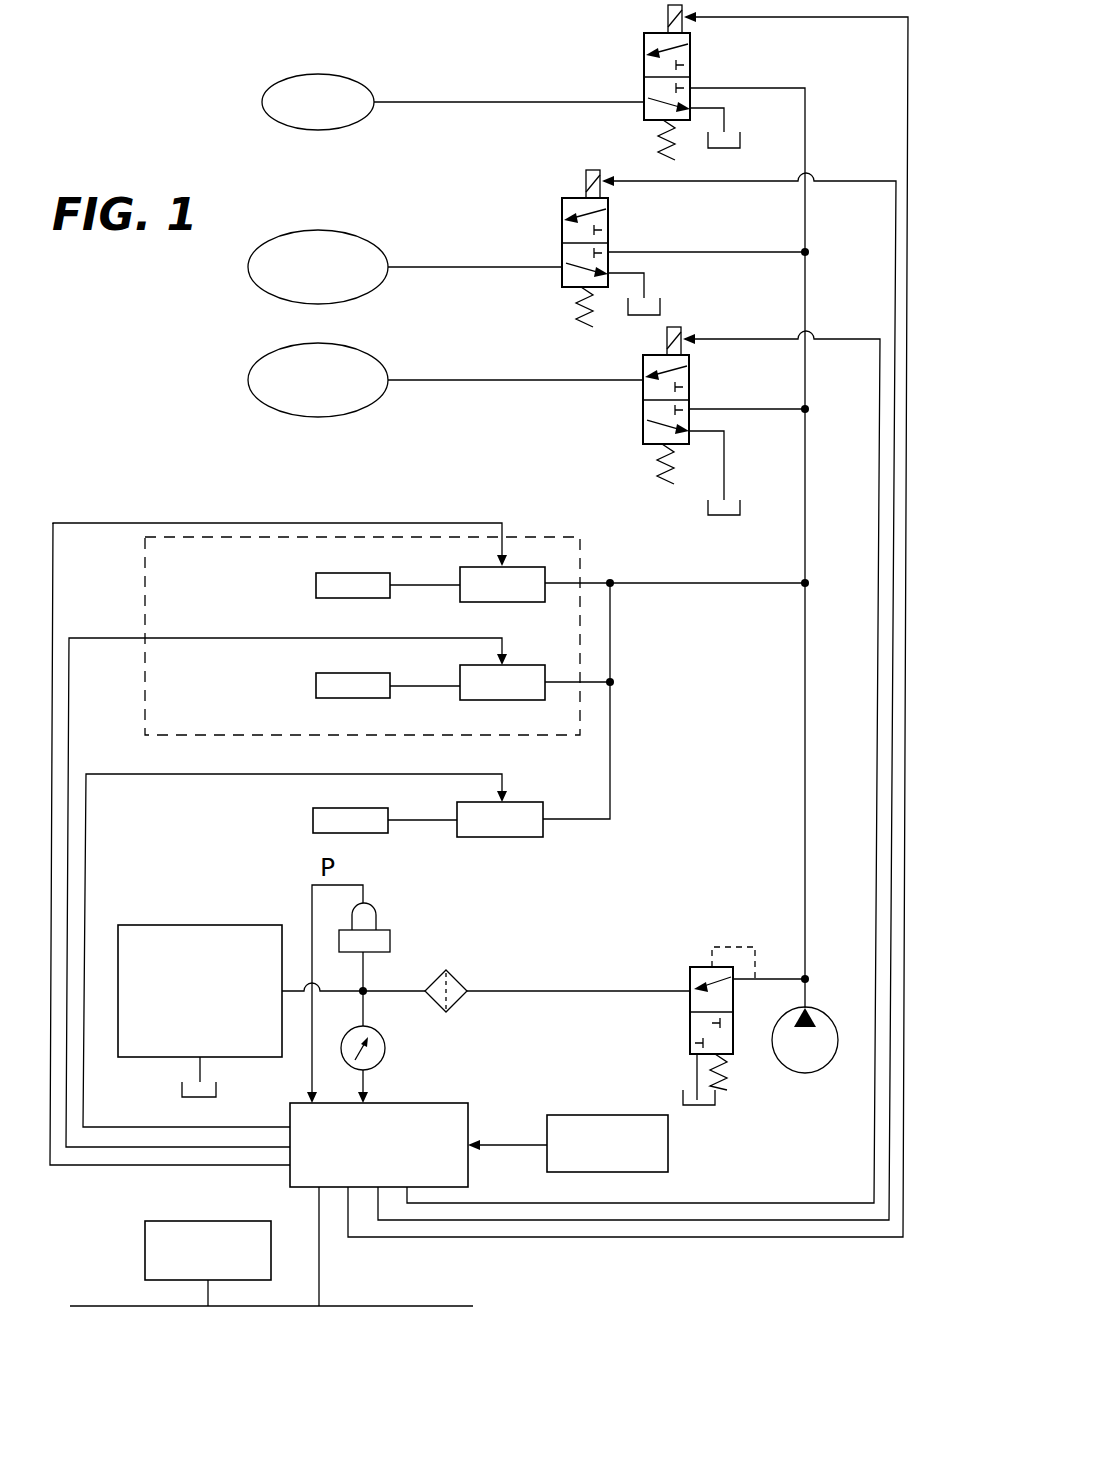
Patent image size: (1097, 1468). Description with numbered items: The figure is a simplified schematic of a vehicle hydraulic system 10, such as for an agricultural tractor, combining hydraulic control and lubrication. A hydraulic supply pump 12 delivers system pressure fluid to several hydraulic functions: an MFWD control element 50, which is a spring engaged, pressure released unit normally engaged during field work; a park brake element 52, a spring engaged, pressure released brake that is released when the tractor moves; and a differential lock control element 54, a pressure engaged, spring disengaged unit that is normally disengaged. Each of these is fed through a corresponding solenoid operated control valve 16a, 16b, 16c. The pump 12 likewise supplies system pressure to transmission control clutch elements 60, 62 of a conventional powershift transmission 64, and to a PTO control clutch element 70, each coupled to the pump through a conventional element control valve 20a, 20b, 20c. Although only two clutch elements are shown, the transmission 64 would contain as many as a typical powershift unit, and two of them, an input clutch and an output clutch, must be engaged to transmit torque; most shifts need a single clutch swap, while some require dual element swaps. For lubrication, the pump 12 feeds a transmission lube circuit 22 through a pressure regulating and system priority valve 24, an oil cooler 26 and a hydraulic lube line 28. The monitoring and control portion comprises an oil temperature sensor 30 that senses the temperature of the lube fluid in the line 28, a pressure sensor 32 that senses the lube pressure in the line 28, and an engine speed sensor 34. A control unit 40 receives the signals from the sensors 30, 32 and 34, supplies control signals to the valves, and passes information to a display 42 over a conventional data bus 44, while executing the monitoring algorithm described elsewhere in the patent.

The vehicle hydraulic system 10 is at (110, 506).
The hydraulic supply pump 12 is at (832, 1020).
The solenoid operated control valve 16a is at (644, 82).
The solenoid operated control valve 16b is at (562, 232).
The solenoid operated control valve 16c is at (643, 407).
The element control valve 20a is at (502, 584).
The element control valve 20b is at (502, 682).
The element control valve 20c is at (500, 819).
The transmission lube circuit 22 is at (210, 925).
The pressure regulating and system priority valve 24 is at (694, 942).
The oil cooler 26 is at (470, 962).
The hydraulic lube line 28 is at (378, 990).
The oil temperature sensor 30 is at (385, 1049).
The pressure sensor 32 is at (378, 905).
The engine speed sensor 34 is at (585, 1115).
The control unit 40 is at (455, 1102).
The display 42 is at (172, 1221).
The data bus 44 is at (370, 1306).
The MFWD control element 50 is at (351, 77).
The park brake element 52 is at (350, 236).
The differential lock control element 54 is at (368, 350).
The transmission control clutch element 60 is at (331, 573).
The transmission control clutch element 62 is at (331, 673).
The powershift transmission 64 is at (222, 537).
The PTO control clutch element 70 is at (326, 808).